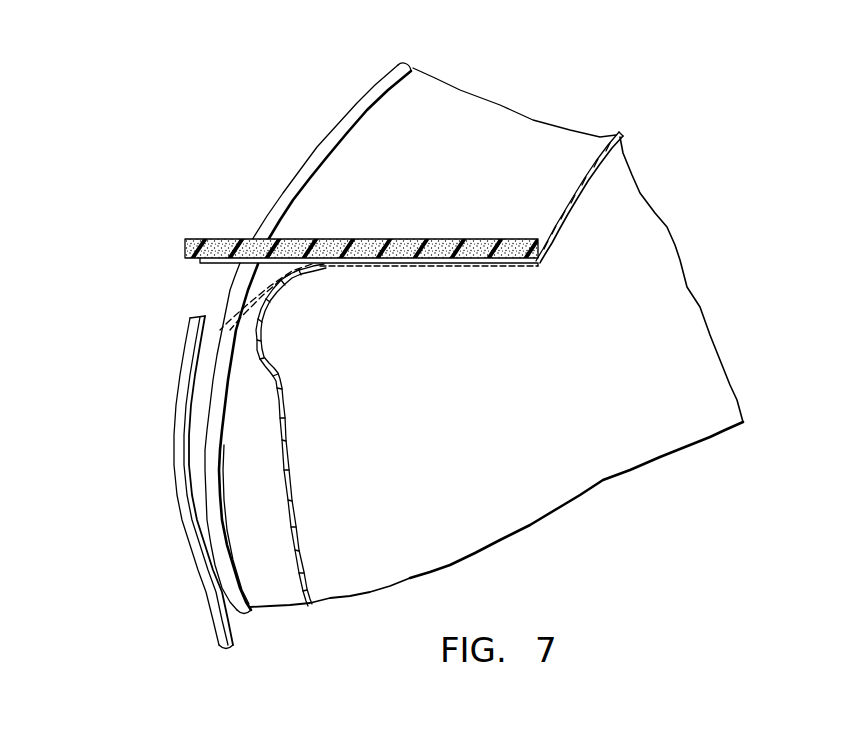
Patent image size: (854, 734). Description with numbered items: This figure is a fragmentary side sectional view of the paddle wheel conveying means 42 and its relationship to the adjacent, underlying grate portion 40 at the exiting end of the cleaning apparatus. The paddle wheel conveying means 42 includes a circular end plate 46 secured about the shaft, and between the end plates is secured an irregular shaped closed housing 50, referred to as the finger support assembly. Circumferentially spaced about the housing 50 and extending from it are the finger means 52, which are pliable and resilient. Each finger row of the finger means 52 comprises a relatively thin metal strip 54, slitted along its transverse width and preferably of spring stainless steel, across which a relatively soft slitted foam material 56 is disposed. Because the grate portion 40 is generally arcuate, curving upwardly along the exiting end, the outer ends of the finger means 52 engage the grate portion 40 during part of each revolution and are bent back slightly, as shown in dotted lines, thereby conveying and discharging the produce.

The grate portion 40 is at (161, 489).
The paddle wheel conveying means 42 is at (252, 168).
The circular end plate 46 is at (517, 142).
The closed housing 50 is at (587, 175).
The finger means 52 is at (286, 250).
The thin metal strip 54 is at (222, 263).
The foam strip 56 is at (248, 241).